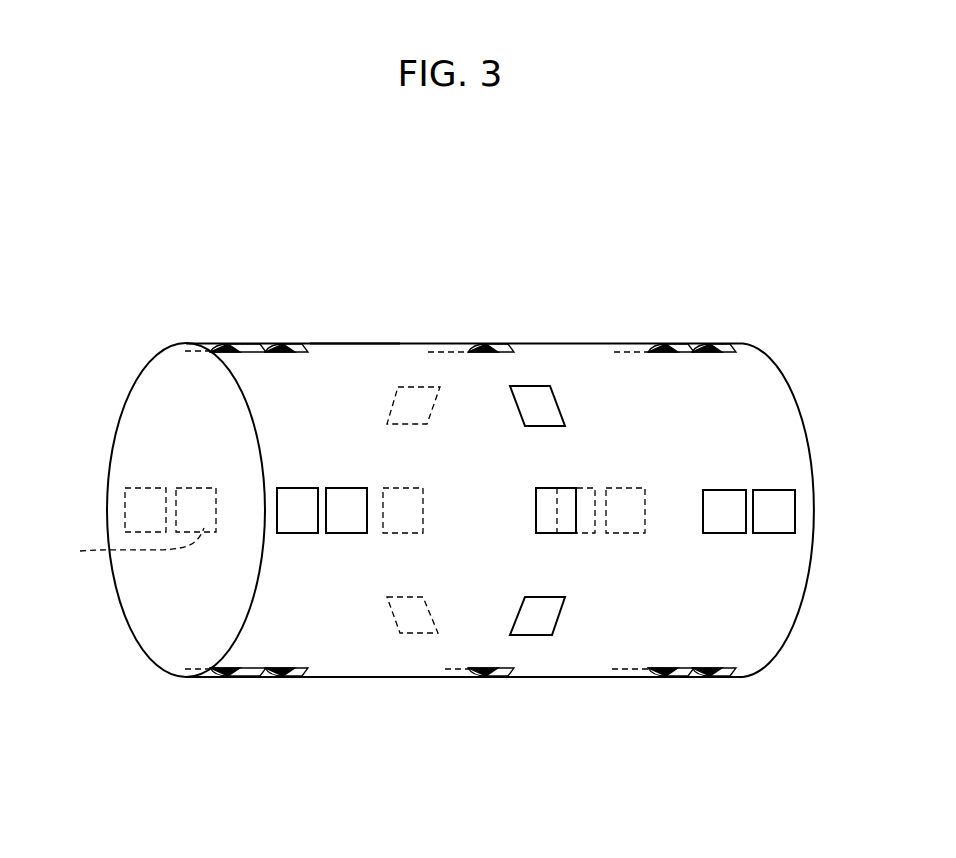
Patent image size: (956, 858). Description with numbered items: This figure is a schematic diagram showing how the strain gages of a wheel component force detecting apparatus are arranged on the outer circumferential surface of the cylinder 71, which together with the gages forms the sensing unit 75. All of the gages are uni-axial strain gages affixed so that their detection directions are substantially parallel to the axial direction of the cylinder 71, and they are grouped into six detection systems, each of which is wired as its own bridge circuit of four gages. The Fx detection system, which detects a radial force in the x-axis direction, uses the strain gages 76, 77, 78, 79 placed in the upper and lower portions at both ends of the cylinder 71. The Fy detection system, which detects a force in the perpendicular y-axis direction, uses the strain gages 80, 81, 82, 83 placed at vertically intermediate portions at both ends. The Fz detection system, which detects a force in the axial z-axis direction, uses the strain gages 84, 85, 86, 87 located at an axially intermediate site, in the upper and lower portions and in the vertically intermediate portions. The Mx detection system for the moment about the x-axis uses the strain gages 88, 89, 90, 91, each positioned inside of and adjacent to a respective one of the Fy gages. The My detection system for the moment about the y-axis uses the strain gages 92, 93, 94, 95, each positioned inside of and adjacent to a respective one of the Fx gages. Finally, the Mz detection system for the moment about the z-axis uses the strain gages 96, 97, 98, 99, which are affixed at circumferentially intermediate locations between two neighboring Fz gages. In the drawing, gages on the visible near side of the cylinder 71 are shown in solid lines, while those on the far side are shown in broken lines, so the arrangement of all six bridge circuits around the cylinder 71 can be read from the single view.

The cylinder 71 is at (782, 326).
The sensing unit 75 is at (322, 352).
The strain gage 76 is at (229, 349).
The strain gage 77 is at (706, 349).
The strain gage 78 is at (702, 678).
The strain gage 79 is at (224, 678).
The strain gage 80 is at (300, 528).
The strain gage 81 is at (790, 512).
The strain gage 82 is at (620, 490).
The strain gage 83 is at (126, 503).
The strain gage 84 is at (476, 349).
The strain gage 85 is at (545, 508).
The strain gage 86 is at (400, 528).
The strain gage 87 is at (478, 678).
The strain gage 88 is at (350, 528).
The strain gage 89 is at (730, 525).
The strain gage 90 is at (572, 490).
The strain gage 91 is at (127, 548).
The strain gage 92 is at (282, 349).
The strain gage 93 is at (660, 349).
The strain gage 94 is at (659, 678).
The strain gage 95 is at (272, 678).
The strain gage 96 is at (537, 395).
The strain gage 97 is at (540, 628).
The strain gage 98 is at (420, 392).
The strain gage 99 is at (410, 627).